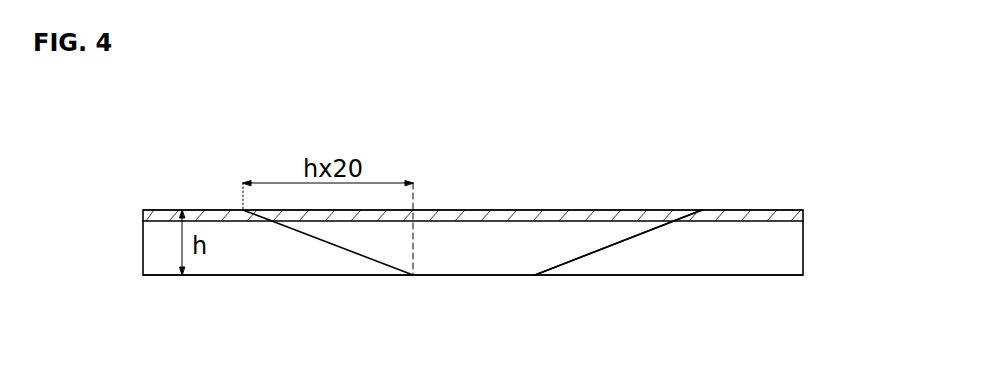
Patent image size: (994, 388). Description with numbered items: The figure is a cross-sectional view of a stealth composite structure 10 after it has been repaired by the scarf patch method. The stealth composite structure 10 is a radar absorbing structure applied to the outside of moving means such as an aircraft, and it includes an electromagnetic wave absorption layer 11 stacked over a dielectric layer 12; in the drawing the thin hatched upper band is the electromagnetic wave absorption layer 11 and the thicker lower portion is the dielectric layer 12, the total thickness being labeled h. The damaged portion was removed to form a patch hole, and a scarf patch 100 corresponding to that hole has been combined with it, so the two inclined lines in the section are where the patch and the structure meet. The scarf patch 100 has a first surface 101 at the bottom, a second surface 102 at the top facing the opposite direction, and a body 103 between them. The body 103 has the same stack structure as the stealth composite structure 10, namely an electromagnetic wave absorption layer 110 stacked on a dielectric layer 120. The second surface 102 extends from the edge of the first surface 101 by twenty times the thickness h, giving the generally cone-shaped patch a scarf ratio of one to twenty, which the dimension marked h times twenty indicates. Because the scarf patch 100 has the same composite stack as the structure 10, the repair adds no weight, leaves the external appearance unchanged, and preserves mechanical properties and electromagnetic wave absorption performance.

The scarf patch 100 is at (376, 141).
The first surface 101 is at (470, 276).
The second surface 102 is at (505, 209).
The body 103 is at (655, 131).
The electromagnetic wave absorption layer 110 is at (578, 212).
The dielectric layer 120 is at (592, 237).
The stealth composite structure 10 is at (78, 222).
The electromagnetic wave absorption layer 11 is at (143, 213).
The dielectric layer 12 is at (143, 260).